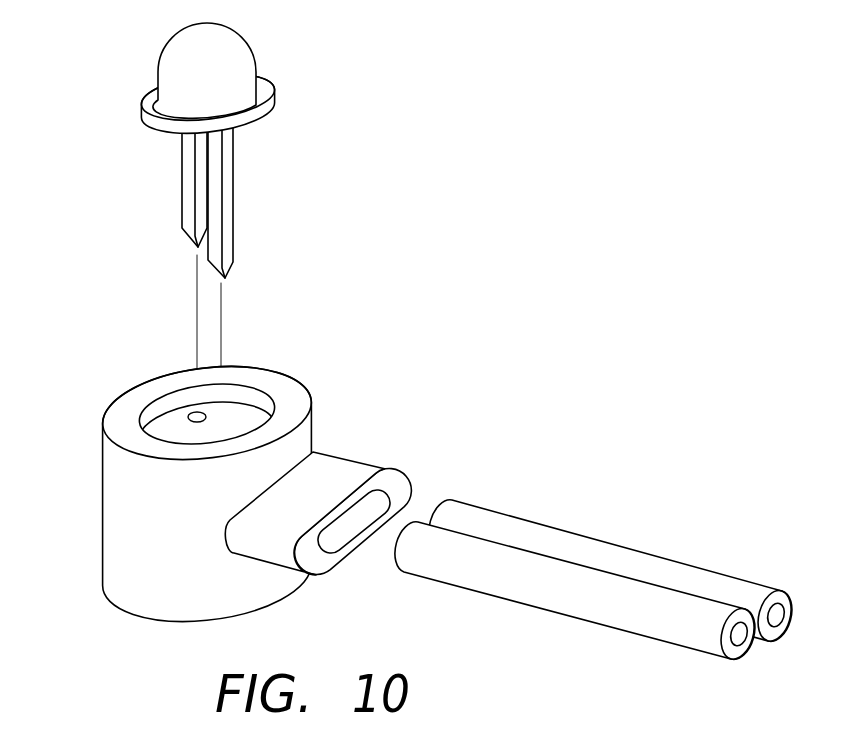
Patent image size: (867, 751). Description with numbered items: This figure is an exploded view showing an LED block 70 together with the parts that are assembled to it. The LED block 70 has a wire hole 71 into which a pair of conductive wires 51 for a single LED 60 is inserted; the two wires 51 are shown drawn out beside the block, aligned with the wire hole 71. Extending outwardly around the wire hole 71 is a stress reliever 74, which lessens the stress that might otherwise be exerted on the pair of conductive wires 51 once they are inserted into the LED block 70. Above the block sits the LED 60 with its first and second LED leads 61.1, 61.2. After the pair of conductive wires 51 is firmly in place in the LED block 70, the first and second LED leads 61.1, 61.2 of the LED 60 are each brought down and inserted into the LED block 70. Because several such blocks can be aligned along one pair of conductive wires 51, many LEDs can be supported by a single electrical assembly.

The LED 60 is at (175, 58).
The first LED lead 61.1 is at (190, 195).
The second LED lead 61.2 is at (227, 202).
The LED block 70 is at (138, 512).
The wire hole 71 is at (353, 527).
The stress reliever 74 is at (361, 477).
The conductive wires 51 is at (491, 556).